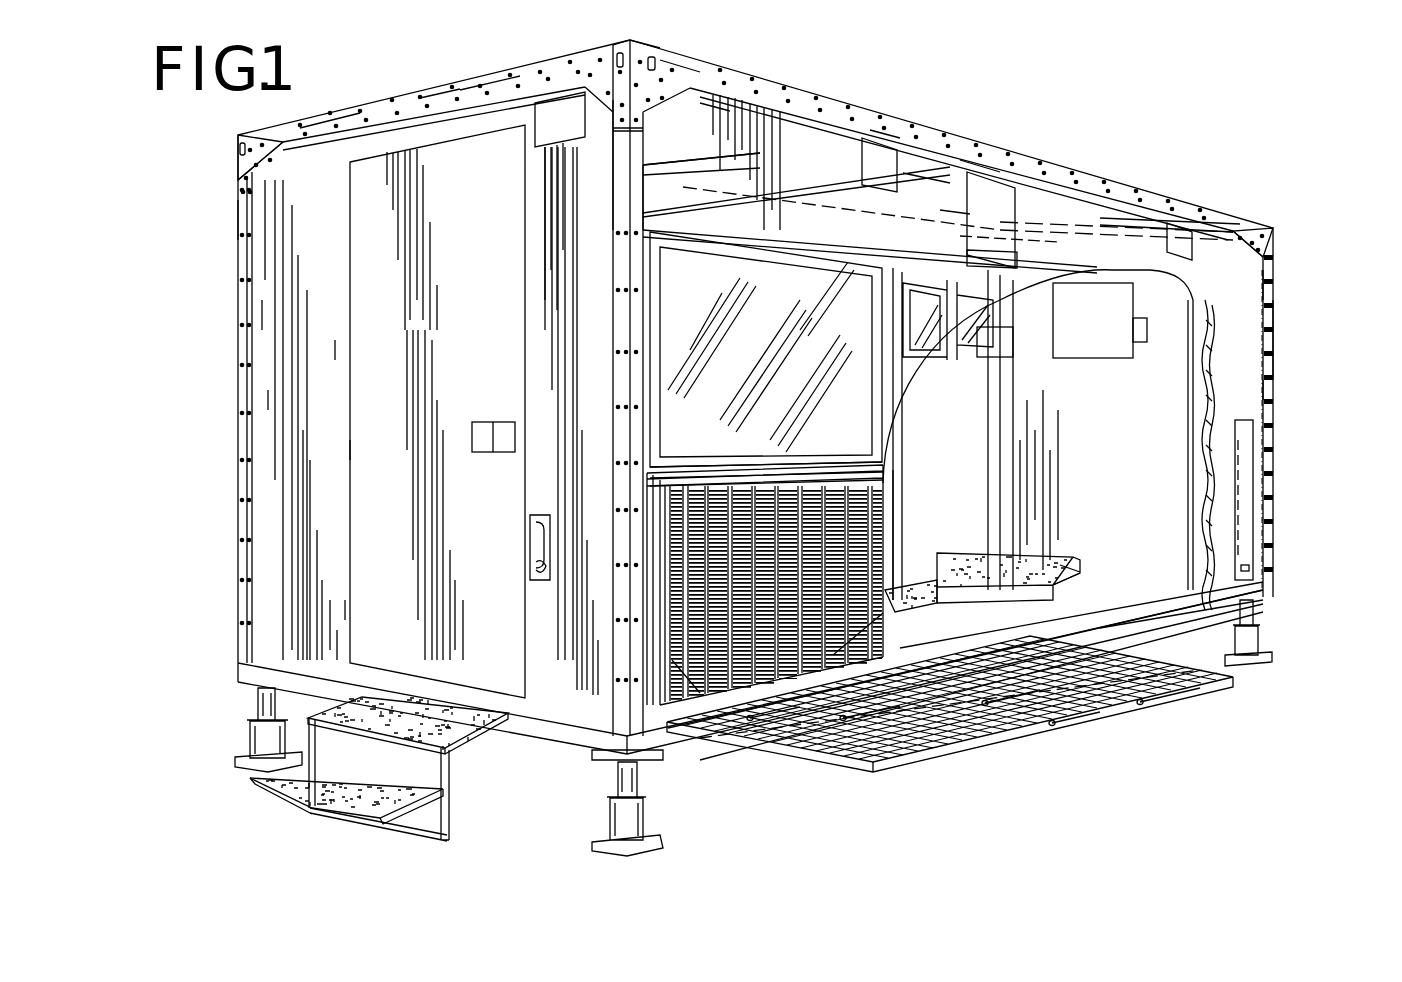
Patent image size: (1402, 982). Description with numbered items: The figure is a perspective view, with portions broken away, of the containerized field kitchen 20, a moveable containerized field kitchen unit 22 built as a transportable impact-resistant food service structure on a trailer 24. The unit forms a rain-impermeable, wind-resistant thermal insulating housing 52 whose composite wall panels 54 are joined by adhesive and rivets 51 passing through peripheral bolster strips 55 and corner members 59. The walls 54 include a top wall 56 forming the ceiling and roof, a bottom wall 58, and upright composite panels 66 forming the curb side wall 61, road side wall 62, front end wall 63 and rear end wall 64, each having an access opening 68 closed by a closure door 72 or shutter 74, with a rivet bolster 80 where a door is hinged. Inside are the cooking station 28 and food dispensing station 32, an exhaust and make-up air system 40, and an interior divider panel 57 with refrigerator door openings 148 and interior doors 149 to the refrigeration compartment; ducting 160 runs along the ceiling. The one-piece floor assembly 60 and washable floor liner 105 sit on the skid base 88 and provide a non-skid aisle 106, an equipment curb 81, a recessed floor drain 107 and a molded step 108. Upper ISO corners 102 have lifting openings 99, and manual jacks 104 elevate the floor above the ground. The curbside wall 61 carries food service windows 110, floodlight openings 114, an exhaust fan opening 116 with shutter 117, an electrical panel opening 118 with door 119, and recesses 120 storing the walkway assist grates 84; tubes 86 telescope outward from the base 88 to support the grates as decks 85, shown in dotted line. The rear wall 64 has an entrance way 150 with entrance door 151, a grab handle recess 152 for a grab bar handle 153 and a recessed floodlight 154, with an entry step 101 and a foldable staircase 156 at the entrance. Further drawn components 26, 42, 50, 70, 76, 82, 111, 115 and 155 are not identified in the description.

The containerized field kitchen 20 is at (1278, 342).
The containerized field kitchen unit 22 is at (632, 42).
The trailer 24 is at (1273, 228).
The roof 26 is at (792, 138).
The cooking station 28 is at (905, 468).
The food dispensing station 32 is at (812, 390).
The exhaust and make-up air system 40 is at (963, 238).
The roof panel 42 is at (883, 140).
The corner gusset 50 is at (246, 136).
The rivets 51 is at (430, 98).
The housing 52 is at (327, 176).
The wall panels 54 is at (282, 307).
The bolster strips 55 is at (322, 122).
The top wall 56 is at (478, 82).
The interior divider panel 57 is at (1040, 463).
The bottom wall 58 is at (1205, 607).
The corner members 59 is at (677, 67).
The floor assembly 60 is at (893, 672).
The curb side wall 61 is at (693, 120).
The road side wall 62 is at (237, 217).
The front end wall 63 is at (1273, 390).
The rear end wall 64 is at (275, 398).
The composite panels 66 is at (1240, 308).
The access opening 68 is at (1014, 212).
The side wall panel 70 is at (380, 448).
The closure door 72 is at (368, 607).
The shutter 74 is at (1143, 230).
The arched duct 76 is at (1033, 285).
The rivet bolster 80 is at (643, 215).
The equipment curb 81 is at (1023, 633).
The louver panel 82 is at (830, 510).
The walkway assist grates 84 is at (803, 752).
The decks 85 is at (1150, 673).
The tubes 86 is at (943, 760).
The base 88 is at (1168, 623).
The openings 99 is at (237, 150).
The entry step 101 is at (500, 733).
The upper ISO corners 102 is at (608, 55).
The manual jacks 104 is at (253, 705).
The floor liner 105 is at (1008, 578).
The non-skid aisle 106 is at (912, 593).
The floor drain 107 is at (1073, 590).
The molded step 108 is at (1077, 590).
The food service windows 110 is at (920, 297).
The ceiling beam 111 is at (800, 185).
The floodlight openings 114 is at (1185, 230).
The hanger bracket 115 is at (887, 163).
The exhaust fan opening 116 is at (1013, 182).
The shutter 117 is at (1003, 257).
The electrical panel opening 118 is at (1253, 458).
The electrical panel door 119 is at (1243, 508).
The recesses 120 is at (645, 505).
The refrigerator door openings 148 is at (980, 343).
The interior doors 149 is at (1110, 335).
The entrance way 150 is at (350, 350).
The entrance door 151 is at (360, 237).
The grab handle recess 152 is at (540, 515).
The grab bar handle 153 is at (540, 576).
The recessed floodlight 154 is at (535, 107).
The fixture lines 155 is at (567, 130).
The foldable staircase 156 is at (300, 790).
The ducting 160 is at (950, 222).